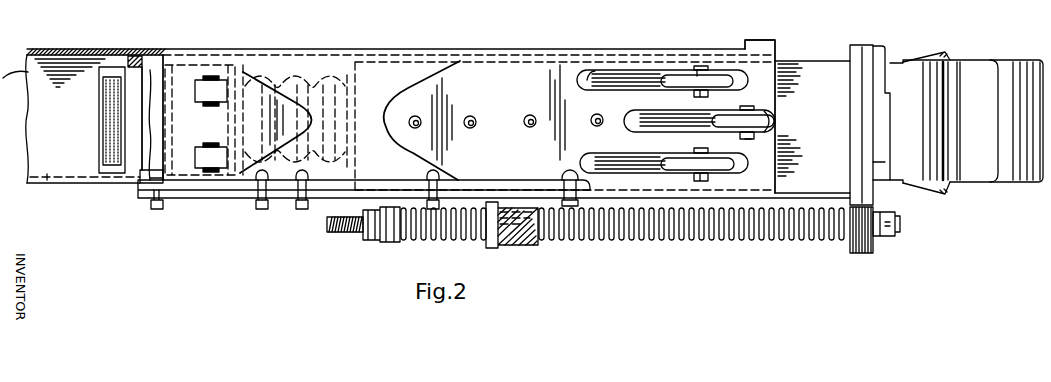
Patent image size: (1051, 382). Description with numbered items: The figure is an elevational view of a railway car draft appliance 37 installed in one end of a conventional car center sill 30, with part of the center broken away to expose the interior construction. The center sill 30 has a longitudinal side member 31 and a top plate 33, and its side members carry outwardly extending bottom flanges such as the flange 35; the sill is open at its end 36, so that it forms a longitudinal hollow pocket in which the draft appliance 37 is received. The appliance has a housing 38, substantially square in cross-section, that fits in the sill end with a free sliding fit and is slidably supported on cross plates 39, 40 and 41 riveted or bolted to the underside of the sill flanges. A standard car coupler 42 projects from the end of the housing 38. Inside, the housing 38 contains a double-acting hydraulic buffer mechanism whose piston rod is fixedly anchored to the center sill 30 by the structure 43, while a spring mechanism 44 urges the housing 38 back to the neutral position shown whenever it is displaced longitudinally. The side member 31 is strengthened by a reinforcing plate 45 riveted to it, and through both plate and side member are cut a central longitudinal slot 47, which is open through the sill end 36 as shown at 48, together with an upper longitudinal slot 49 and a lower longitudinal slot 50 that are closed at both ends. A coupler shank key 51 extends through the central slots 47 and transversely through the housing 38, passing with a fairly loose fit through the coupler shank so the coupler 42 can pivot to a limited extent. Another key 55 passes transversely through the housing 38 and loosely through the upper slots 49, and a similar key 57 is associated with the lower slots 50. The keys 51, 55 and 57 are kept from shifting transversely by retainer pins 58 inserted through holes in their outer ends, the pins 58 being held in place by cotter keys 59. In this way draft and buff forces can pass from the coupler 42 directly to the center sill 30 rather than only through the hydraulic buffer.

The center sill 30 is at (57, 48).
The top plate 33 is at (130, 56).
The side member 31 is at (289, 62).
The reinforcing plate 45 is at (432, 88).
The key 55 is at (653, 71).
The retainer pin 58 is at (704, 67).
The cotter key 59 is at (692, 93).
The upper longitudinal slot 49 is at (588, 80).
The central longitudinal slot 47 is at (707, 126).
The coupler shank key 51 is at (772, 128).
The open end of central slot 48 is at (777, 139).
The lower longitudinal slot 50 is at (671, 159).
The key 57 is at (735, 168).
The end of center sill 36 is at (794, 63).
The draft appliance 37 is at (814, 60).
The housing 38 is at (832, 76).
The car coupler 42 is at (966, 63).
The bottom flange 35 is at (48, 185).
The piston rod anchoring structure 43 is at (148, 155).
The cross plate 41 is at (198, 197).
The cross plate 40 is at (318, 198).
The spring mechanism 44 is at (590, 240).
The cross plate 39 is at (664, 212).